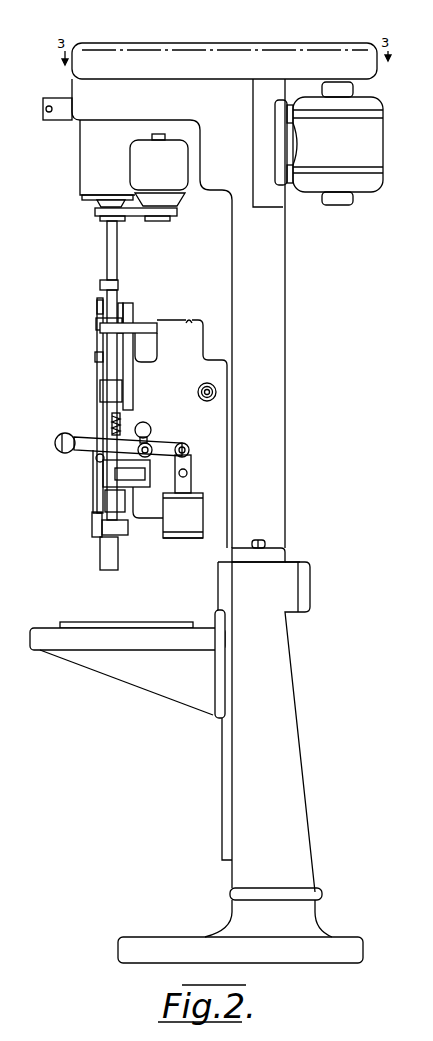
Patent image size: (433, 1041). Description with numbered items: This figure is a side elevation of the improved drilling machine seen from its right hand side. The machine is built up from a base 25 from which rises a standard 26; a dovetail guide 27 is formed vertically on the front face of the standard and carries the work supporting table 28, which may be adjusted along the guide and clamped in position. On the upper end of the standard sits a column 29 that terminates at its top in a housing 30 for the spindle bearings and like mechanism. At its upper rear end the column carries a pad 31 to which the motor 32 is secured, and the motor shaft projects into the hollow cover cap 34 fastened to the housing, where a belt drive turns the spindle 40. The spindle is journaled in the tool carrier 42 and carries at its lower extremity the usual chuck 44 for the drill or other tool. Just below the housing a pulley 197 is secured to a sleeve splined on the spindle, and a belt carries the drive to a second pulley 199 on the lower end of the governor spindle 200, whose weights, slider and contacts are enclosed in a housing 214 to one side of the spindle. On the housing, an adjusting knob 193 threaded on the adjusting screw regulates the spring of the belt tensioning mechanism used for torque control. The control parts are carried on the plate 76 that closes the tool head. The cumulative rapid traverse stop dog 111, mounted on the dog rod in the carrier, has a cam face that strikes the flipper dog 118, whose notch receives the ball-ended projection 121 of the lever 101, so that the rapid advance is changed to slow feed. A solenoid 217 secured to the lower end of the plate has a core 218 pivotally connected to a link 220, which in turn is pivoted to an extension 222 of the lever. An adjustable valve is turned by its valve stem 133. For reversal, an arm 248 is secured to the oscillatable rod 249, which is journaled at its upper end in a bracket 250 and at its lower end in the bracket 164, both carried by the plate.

The base 25 is at (335, 945).
The standard 26 is at (292, 745).
The dovetail guide 27 is at (222, 797).
The work supporting table 28 is at (158, 682).
The column 29 is at (286, 452).
The housing 30 is at (100, 107).
The pad 31 is at (282, 188).
The motor 32 is at (372, 150).
The hollow cover cap 34 is at (262, 46).
The spindle 40 is at (117, 246).
The tool carrier 42 is at (97, 349).
The chuck 44 is at (102, 562).
The plate 76 is at (190, 318).
The lever 101 is at (82, 450).
The cumulative rapid traverse stop dog 111 is at (130, 420).
The flipper dog 118 is at (152, 427).
The projection 121 is at (148, 440).
The valve stem 133 is at (201, 386).
The bracket 164 is at (102, 470).
The adjusting knob or nut 193 is at (50, 118).
The pulley 197 is at (103, 221).
The second pulley 199 is at (172, 203).
The governor spindle 200 is at (160, 219).
The housing 214 is at (138, 158).
The solenoid 217 is at (196, 540).
The core 218 is at (203, 497).
The link 220 is at (191, 464).
The extension 222 is at (186, 444).
The arm 248 is at (118, 532).
The oscillatable rod 249 is at (104, 393).
The bracket 250 is at (150, 327).